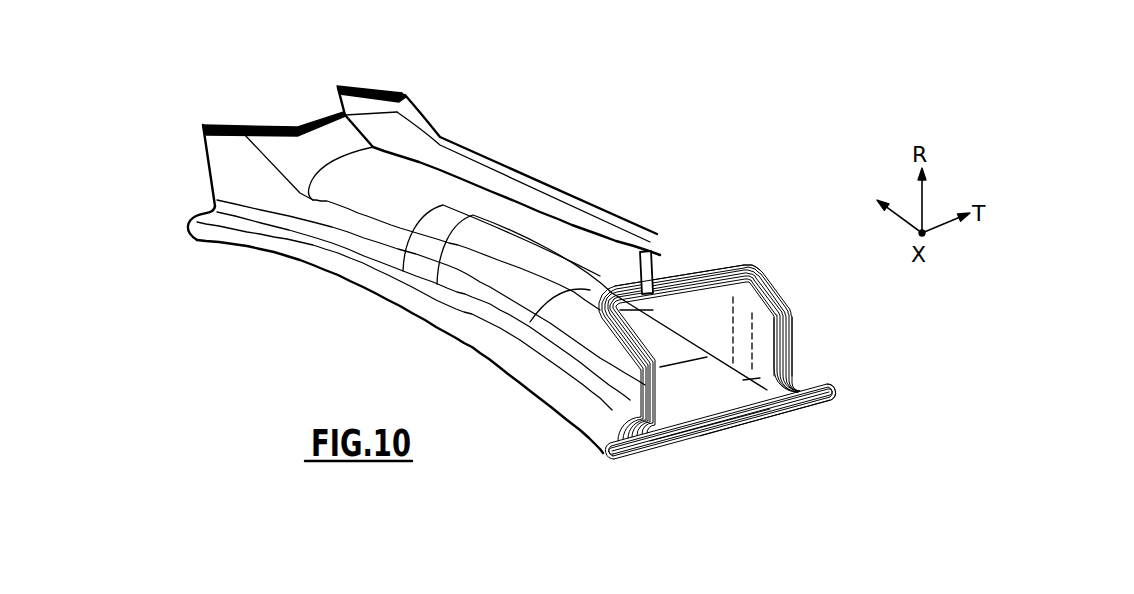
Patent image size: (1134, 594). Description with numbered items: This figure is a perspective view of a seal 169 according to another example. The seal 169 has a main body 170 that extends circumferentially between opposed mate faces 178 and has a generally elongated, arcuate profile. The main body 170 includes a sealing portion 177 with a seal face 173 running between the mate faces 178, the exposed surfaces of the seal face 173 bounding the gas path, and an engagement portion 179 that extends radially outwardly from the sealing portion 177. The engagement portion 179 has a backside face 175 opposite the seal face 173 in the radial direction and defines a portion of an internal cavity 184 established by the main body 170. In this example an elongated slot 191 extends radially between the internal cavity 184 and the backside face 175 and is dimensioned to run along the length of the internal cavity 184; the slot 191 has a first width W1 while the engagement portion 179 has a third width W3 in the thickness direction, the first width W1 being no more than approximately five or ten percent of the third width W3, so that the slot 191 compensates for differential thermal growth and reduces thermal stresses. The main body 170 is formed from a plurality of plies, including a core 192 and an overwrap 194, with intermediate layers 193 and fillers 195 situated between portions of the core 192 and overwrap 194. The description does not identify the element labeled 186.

The seal 169 is at (141, 93).
The main body 170 is at (590, 261).
The elongated slot 191 is at (522, 213).
The backside face 175 is at (666, 251).
The first width W1 is at (626, 264).
The top wall 186 is at (691, 285).
The engagement portion 179 is at (762, 283).
The core 192 is at (795, 294).
The internal cavity 184 is at (763, 347).
The overwrap 194 is at (804, 351).
The fillers 195 is at (739, 421).
The sealing portion 177 is at (842, 387).
The mate faces 178 is at (829, 404).
The intermediate layers 193 is at (793, 407).
The seal face 173 is at (666, 447).
The third width W3 is at (606, 406).